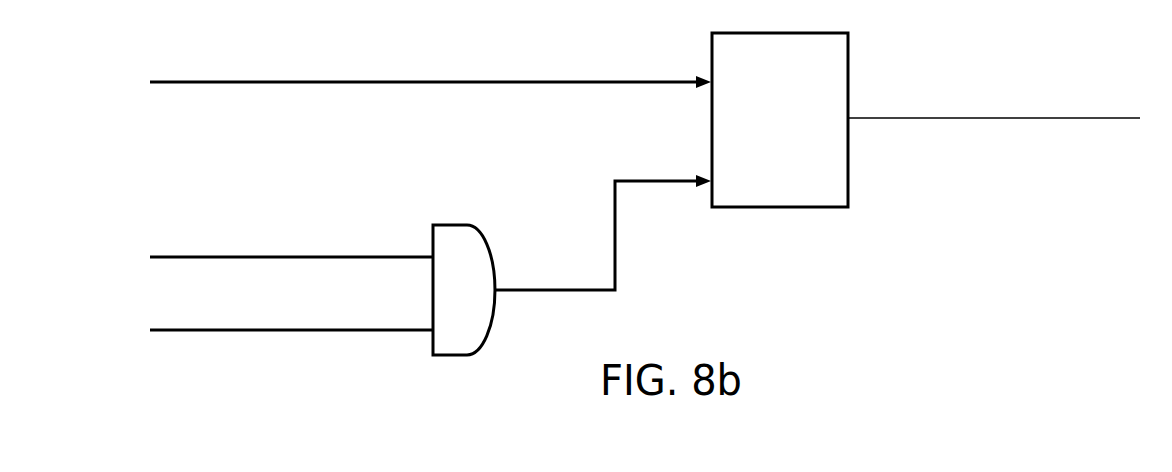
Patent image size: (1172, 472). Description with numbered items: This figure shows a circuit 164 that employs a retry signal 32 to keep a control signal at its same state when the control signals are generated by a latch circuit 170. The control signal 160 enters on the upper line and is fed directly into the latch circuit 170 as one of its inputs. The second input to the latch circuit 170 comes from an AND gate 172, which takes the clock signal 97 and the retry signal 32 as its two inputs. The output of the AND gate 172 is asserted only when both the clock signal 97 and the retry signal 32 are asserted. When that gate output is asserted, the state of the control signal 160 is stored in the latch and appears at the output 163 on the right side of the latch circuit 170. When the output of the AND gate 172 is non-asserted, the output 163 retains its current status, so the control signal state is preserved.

The control signal 160 is at (160, 56).
The clock signal 97 is at (160, 230).
The retry signal 32 is at (160, 301).
The AND gate 172 is at (479, 230).
The latch circuit 170 is at (780, 209).
The output 163 is at (1113, 117).
The circuit 164 is at (1074, 260).